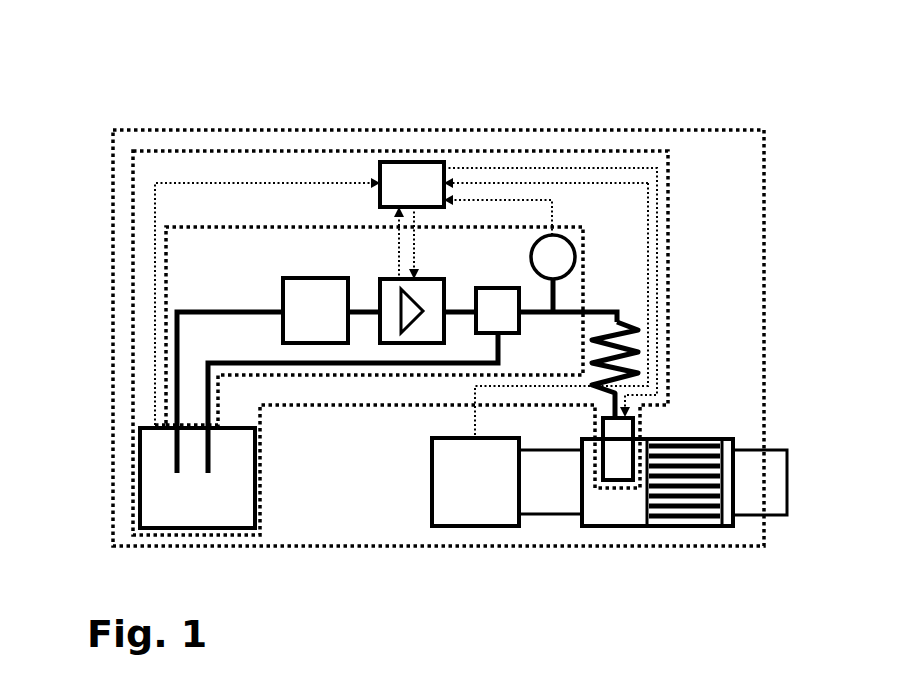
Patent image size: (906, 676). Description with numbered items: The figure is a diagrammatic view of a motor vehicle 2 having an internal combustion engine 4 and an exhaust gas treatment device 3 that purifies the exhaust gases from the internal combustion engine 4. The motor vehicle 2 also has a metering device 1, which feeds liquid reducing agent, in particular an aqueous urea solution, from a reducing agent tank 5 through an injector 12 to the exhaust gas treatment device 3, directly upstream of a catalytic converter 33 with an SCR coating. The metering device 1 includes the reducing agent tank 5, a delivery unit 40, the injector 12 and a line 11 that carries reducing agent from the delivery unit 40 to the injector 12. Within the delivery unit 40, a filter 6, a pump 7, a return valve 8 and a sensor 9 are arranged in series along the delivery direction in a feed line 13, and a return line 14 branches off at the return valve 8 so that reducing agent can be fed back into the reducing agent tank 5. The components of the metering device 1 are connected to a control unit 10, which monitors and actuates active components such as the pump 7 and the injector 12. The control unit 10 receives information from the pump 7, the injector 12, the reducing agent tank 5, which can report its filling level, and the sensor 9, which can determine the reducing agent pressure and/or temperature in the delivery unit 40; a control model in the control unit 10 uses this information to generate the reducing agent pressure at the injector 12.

The metering device 1 is at (600, 151).
The motor vehicle 2 is at (128, 103).
The exhaust gas treatment device 3 is at (627, 527).
The internal combustion engine 4 is at (472, 527).
The reducing agent tank 5 is at (255, 508).
The filter 6 is at (300, 278).
The pump 7 is at (385, 279).
The return valve 8 is at (500, 288).
The sensor 9 is at (563, 237).
The control unit 10 is at (395, 162).
The line 11 is at (623, 322).
The injector 12 is at (643, 430).
The feed line 13 is at (176, 362).
The return line 14 is at (206, 395).
The catalytic converter 33 is at (683, 527).
The delivery unit 40 is at (241, 227).